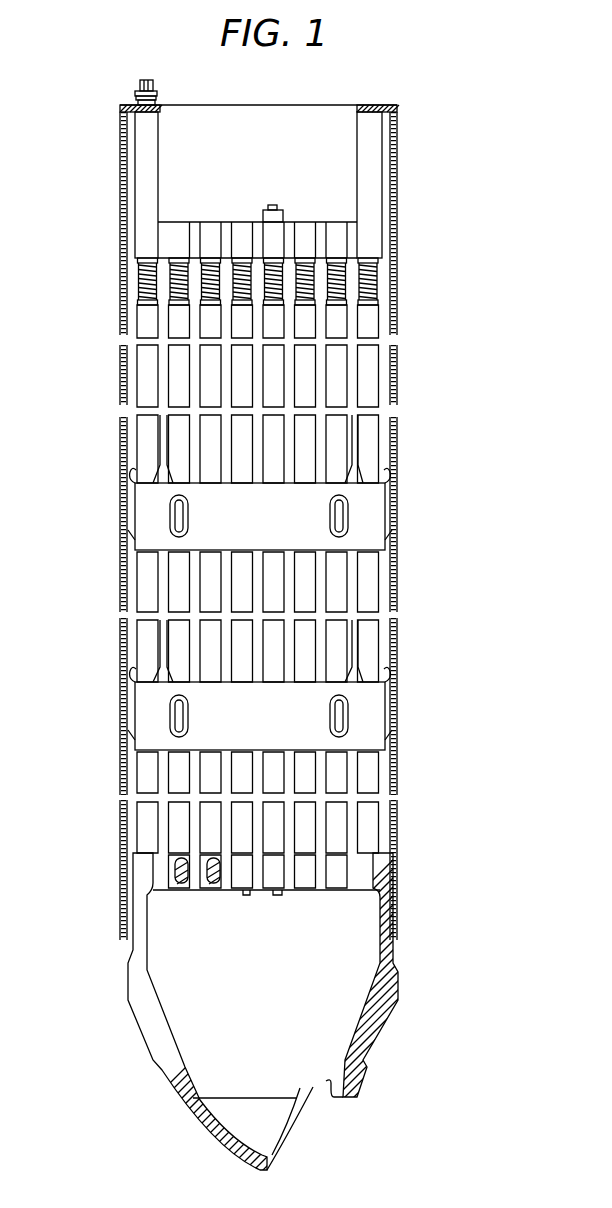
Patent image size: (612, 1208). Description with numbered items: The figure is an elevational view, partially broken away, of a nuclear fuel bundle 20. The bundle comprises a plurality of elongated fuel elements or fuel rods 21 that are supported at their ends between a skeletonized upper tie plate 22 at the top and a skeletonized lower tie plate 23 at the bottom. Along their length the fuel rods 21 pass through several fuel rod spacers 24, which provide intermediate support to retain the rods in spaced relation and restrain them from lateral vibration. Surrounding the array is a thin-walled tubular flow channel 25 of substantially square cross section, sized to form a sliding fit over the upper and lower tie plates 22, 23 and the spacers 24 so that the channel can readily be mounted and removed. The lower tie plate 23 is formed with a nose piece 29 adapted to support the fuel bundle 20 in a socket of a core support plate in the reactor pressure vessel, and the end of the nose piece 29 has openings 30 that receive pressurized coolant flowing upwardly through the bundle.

The fuel bundle 20 is at (405, 183).
The fuel rods 21 is at (368, 378).
The upper tie plate 22 is at (142, 213).
The lower tie plate 23 is at (310, 882).
The fuel rod spacers 24 is at (362, 522).
The flow channel 25 is at (403, 598).
The nose piece 29 is at (378, 1023).
The openings 30 is at (337, 1132).